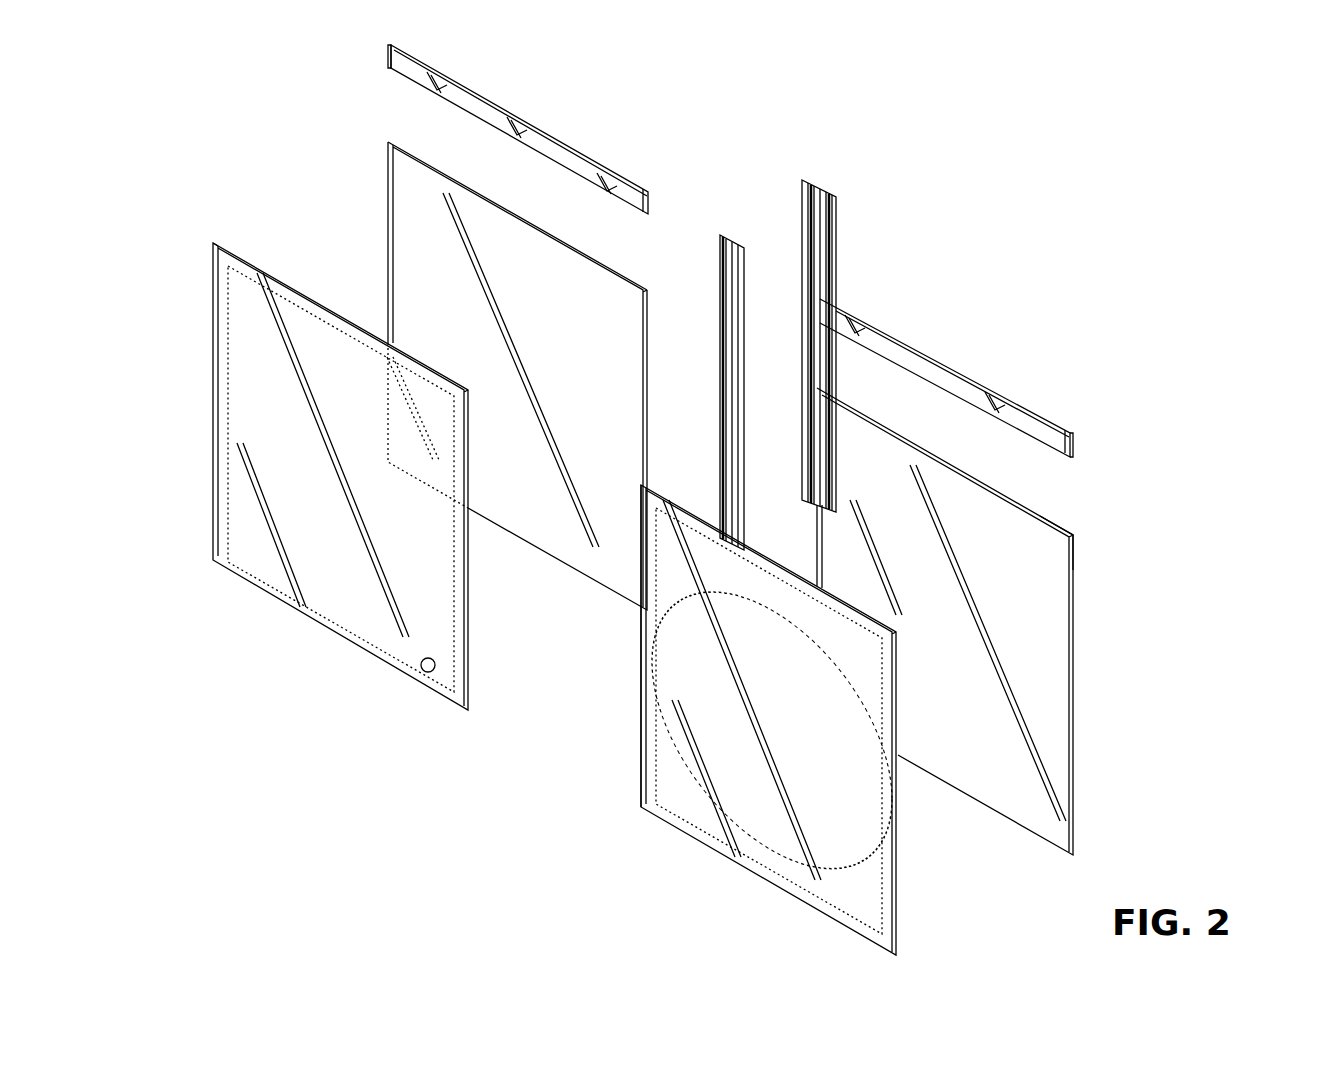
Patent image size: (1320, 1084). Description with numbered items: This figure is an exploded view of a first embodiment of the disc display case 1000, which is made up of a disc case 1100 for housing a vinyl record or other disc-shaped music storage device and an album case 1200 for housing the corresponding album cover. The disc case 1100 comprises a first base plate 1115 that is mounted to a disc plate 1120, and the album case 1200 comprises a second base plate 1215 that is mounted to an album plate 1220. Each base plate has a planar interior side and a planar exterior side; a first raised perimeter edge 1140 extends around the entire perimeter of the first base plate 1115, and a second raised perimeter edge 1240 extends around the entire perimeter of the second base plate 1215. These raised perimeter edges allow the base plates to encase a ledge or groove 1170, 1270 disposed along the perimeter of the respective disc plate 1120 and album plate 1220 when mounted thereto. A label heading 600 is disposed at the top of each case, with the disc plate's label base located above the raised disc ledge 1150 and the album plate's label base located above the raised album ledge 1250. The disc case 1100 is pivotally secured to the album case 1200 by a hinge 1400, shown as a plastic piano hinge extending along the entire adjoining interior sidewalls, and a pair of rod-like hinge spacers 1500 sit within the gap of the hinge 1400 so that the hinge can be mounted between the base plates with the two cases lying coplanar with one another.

The album case 1200 is at (265, 176).
The second base plate 1215 is at (386, 172).
The label heading 600 is at (650, 190).
The hinge spacers 1500 is at (738, 245).
The hinge 1400 is at (836, 207).
The disc display case 1000 is at (1063, 248).
The groove 1270 is at (213, 322).
The album plate 1220 is at (213, 443).
The second raised perimeter edge 1240 is at (530, 545).
The raised album ledge 1250 is at (428, 672).
The first raised perimeter edge 1140 is at (1075, 535).
The first base plate 1115 is at (1080, 610).
The disc case 1100 is at (1157, 735).
The groove 1170 is at (640, 812).
The disc plate 1120 is at (900, 856).
The raised disc ledge 1150 is at (823, 882).